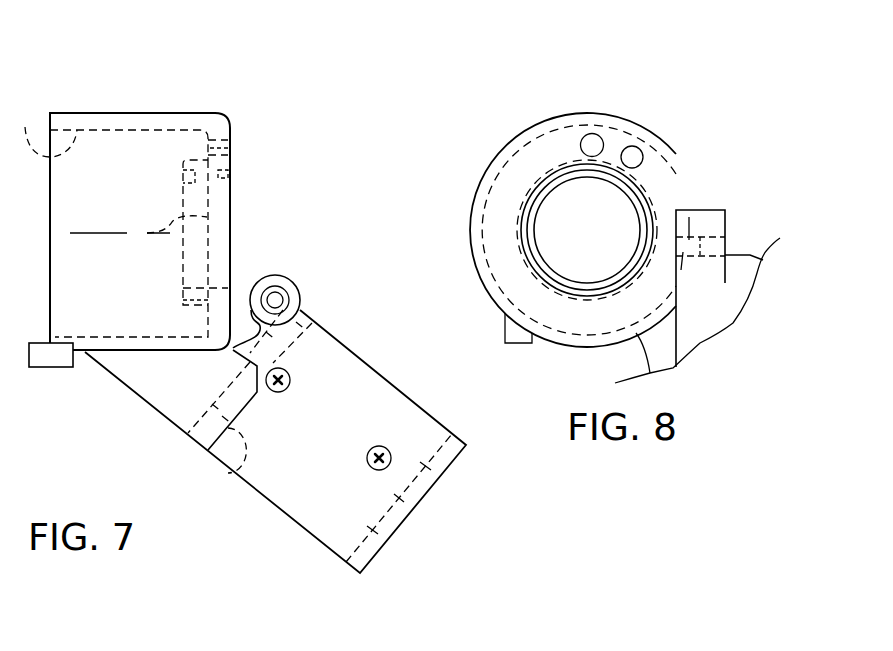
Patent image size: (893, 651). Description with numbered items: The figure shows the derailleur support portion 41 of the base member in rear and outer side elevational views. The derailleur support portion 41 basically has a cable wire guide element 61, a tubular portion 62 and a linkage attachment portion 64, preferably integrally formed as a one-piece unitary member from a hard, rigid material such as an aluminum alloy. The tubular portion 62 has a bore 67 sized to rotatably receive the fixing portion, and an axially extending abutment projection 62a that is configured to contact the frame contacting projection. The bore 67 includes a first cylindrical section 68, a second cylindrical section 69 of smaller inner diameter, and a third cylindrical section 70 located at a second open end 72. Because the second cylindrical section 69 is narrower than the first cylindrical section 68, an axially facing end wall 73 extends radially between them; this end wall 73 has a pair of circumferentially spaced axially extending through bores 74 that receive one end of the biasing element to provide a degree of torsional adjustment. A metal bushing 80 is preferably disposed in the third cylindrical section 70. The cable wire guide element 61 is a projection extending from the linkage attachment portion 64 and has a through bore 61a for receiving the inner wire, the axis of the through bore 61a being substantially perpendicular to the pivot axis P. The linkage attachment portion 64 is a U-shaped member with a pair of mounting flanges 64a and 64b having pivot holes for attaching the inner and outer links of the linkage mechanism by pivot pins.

In FIG. 7, the derailleur support portion 41 is at (238, 100).
In FIG. 8, the derailleur support portion 41 is at (676, 103).
In FIG. 7, the tubular portion 62 is at (110, 104).
In FIG. 8, the tubular portion 62 is at (513, 138).
In FIG. 7, the abutment projection 62a is at (61, 368).
In FIG. 8, the abutment projection 62a is at (520, 346).
In FIG. 7, the first cylindrical section 68 is at (45, 130).
In FIG. 7, the second cylindrical section 69 is at (180, 200).
In FIG. 7, the third cylindrical section 70 is at (232, 187).
In FIG. 8, the third cylindrical section 70 is at (542, 276).
In FIG. 8, the second open end 72 is at (530, 283).
In FIG. 7, the axially facing end wall 73 is at (207, 317).
In FIG. 7, the axially extending through bores 74 is at (232, 148).
In FIG. 8, the axially extending through bores 74 is at (630, 147).
In FIG. 7, the pivot axis P is at (207, 217).
In FIG. 7, the cable wire guide element 61 is at (287, 278).
In FIG. 8, the cable wire guide element 61 is at (707, 208).
In FIG. 7, the through bore 61a is at (290, 298).
In FIG. 8, the through bore 61a is at (730, 243).
In FIG. 7, the linkage attachment portion 64 is at (372, 364).
In FIG. 8, the linkage attachment portion 64 is at (717, 317).
In FIG. 7, the mounting flange 64a is at (227, 473).
In FIG. 7, the mounting flange 64b is at (407, 513).
In FIG. 8, the bore 67 is at (615, 206).
In FIG. 8, the metal bushing 80 is at (537, 207).